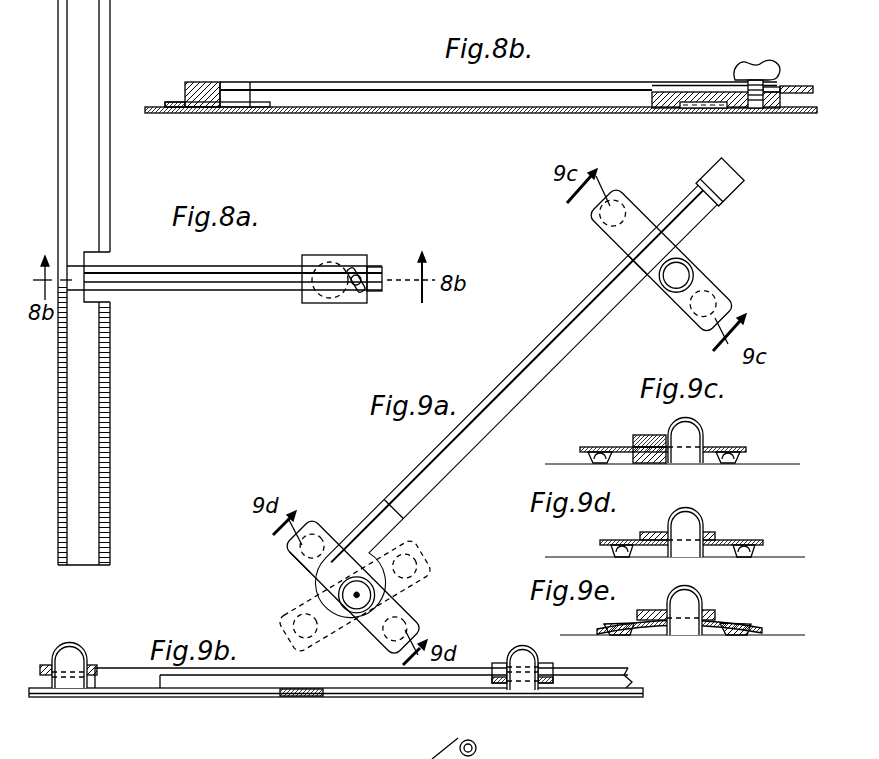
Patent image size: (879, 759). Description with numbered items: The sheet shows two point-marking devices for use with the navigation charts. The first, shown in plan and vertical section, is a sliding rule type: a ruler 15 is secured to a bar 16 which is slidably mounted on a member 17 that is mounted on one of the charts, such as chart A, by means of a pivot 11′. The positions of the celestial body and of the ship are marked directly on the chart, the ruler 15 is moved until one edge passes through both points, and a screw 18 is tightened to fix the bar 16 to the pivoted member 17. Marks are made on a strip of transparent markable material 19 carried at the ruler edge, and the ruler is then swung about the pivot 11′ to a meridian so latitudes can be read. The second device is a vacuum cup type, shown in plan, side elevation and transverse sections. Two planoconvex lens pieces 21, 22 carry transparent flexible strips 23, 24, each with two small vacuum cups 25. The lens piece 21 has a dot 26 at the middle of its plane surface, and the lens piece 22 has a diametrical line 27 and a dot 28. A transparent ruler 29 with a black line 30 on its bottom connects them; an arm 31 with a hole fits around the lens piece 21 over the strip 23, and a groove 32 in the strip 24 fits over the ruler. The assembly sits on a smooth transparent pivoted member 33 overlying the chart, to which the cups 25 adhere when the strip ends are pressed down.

In FIG. 8A, the ruler 15 is at (84, 24).
In FIG. 8B, the ruler 15 is at (210, 100).
In FIG. 8A, the strip of transparent markable material 19 is at (106, 45).
In FIG. 8B, the strip of transparent markable material 19 is at (172, 102).
In FIG. 8A, the bar 16 is at (243, 292).
In FIG. 8B, the bar 16 is at (498, 82).
In FIG. 8A, the member 17 is at (350, 303).
In FIG. 8B, the member 17 is at (660, 93).
In FIG. 8A, the screw 18 is at (360, 270).
In FIG. 8B, the screw 18 is at (785, 50).
In FIG. 8A, the pivot 11′ is at (320, 292).
In FIG. 8B, the pivot 11′ is at (690, 109).
In FIG. 8B, the chart A is at (512, 113).
In FIG. 9B, the chart A is at (408, 703).
In FIG. 9A, the planoconvex lens piece 21 is at (353, 578).
In FIG. 9D, the planoconvex lens piece 21 is at (695, 506).
In FIG. 9E, the planoconvex lens piece 21 is at (688, 597).
In FIG. 9B, the planoconvex lens piece 21 is at (70, 656).
In FIG. 9A, the planoconvex lens piece 22 is at (682, 279).
In FIG. 9C, the planoconvex lens piece 22 is at (672, 422).
In FIG. 9B, the planoconvex lens piece 22 is at (537, 643).
In FIG. 9A, the transparent flexible strip 23 is at (290, 549).
In FIG. 9D, the transparent flexible strip 23 is at (735, 543).
In FIG. 9E, the transparent flexible strip 23 is at (730, 625).
In FIG. 9B, the transparent flexible strip 23 is at (97, 692).
In FIG. 9C, the transparent flexible strip 24 is at (722, 449).
In FIG. 9B, the transparent flexible strip 24 is at (502, 683).
In FIG. 9A, the vacuum cups 25 is at (600, 226).
In FIG. 9C, the vacuum cups 25 is at (598, 460).
In FIG. 9D, the vacuum cups 25 is at (612, 551).
In FIG. 9E, the vacuum cups 25 is at (625, 634).
In FIG. 9A, the dot 26 is at (357, 595).
In FIG. 9A, the diametrical line 27 is at (633, 291).
In FIG. 9A, the dot 28 is at (646, 298).
In FIG. 9A, the transparent ruler 29 is at (546, 339).
In FIG. 9C, the transparent ruler 29 is at (650, 463).
In FIG. 9B, the transparent ruler 29 is at (232, 678).
In FIG. 9A, the black line 30 is at (590, 311).
In FIG. 9A, the arm 31 is at (333, 612).
In FIG. 9D, the arm 31 is at (650, 537).
In FIG. 9E, the arm 31 is at (637, 615).
In FIG. 9B, the arm 31 is at (90, 671).
In FIG. 9C, the groove 32 is at (633, 445).
In FIG. 9B, the pivoted member 33 is at (640, 693).